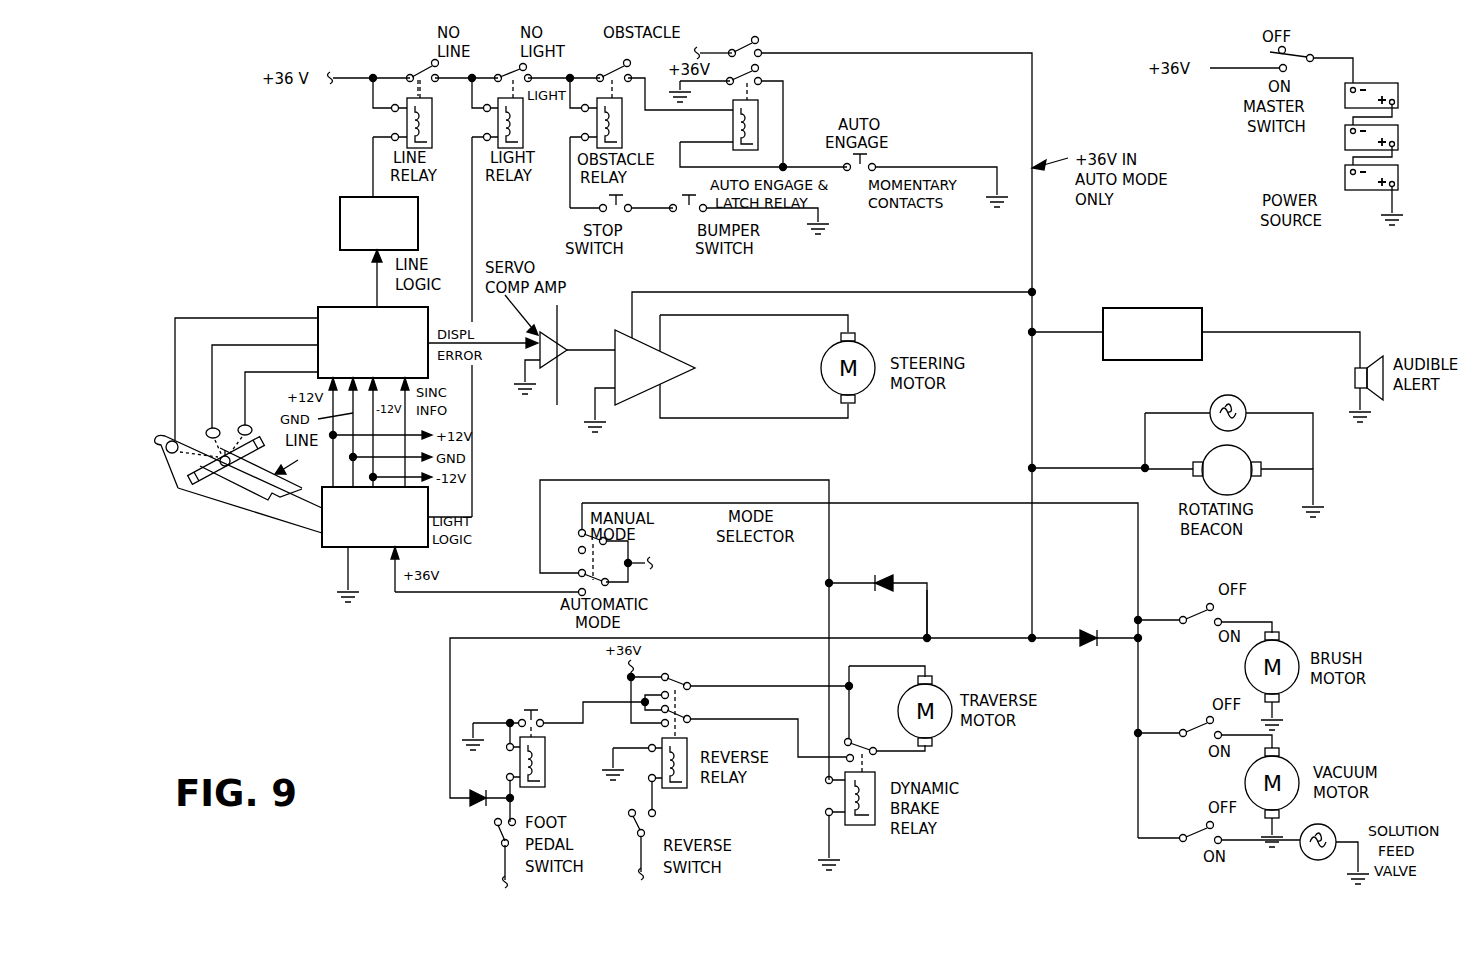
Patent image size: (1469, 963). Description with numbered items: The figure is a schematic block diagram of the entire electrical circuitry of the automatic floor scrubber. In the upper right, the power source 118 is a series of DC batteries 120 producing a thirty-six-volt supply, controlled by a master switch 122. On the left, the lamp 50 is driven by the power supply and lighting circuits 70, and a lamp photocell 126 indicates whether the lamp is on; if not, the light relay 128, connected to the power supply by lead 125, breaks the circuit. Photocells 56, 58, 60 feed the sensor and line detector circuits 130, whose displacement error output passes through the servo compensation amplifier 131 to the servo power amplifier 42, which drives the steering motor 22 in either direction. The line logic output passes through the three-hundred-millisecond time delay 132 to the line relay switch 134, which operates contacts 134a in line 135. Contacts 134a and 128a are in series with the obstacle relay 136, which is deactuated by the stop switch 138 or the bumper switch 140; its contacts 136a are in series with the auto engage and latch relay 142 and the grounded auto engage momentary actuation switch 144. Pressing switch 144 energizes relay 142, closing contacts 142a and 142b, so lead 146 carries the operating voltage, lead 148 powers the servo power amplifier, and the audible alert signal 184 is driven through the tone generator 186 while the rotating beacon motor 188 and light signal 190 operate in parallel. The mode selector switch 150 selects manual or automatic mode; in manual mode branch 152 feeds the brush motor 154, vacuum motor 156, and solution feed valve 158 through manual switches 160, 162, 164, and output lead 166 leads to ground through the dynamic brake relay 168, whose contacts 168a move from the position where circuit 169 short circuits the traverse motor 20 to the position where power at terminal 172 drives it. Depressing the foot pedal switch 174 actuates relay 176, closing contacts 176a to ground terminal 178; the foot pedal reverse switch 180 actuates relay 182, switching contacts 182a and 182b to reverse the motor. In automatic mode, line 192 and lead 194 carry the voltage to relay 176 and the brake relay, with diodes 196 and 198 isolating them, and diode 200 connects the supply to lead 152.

The traverse motor 20 is at (945, 733).
The steering motor 22 is at (872, 348).
The servo power amplifier 42 is at (667, 380).
The lamp 50 is at (200, 493).
The photocell 56 is at (155, 455).
The photocell 58 is at (230, 412).
The photocell 60 is at (200, 420).
The power supply and lighting circuits 70 is at (340, 548).
The power source 118 is at (1346, 154).
The DC batteries 120 is at (1396, 172).
The master switch 122 is at (1300, 51).
The lead 125 is at (475, 500).
The lamp photocell 126 is at (235, 478).
The light relay 128 is at (512, 142).
The light relay contacts 128a is at (530, 68).
The sensor and line detector circuits 130 is at (318, 308).
The servo compensation amplifier 131 is at (564, 344).
The 300 millisecond time delay 132 is at (340, 212).
The line relay switch 134 is at (420, 142).
The line relay contacts 134a is at (445, 92).
The line 135 is at (396, 70).
The obstacle relay 136 is at (612, 142).
The obstacle relay contacts 136a is at (627, 60).
The stop switch 138 is at (632, 204).
The bumper switch 140 is at (681, 215).
The auto engage and latch relay 142 is at (758, 143).
The relay switch 142a is at (762, 70).
The relay contacts 142b is at (762, 43).
The auto engage momentary actuation switch 144 is at (880, 164).
The lead 146 is at (948, 53).
The lead 148 is at (890, 292).
The mode selector switch 150 is at (633, 556).
The branch 152 is at (918, 502).
The brush motor 154 is at (1292, 650).
The vacuum motor 156 is at (1292, 765).
The solution feed valve 158 is at (1310, 860).
The manual switch 160 is at (1200, 612).
The manual switch 162 is at (1197, 725).
The manual switch 164 is at (1200, 832).
The output lead 166 is at (722, 480).
The dynamic brake relay 168 is at (875, 828).
The dynamic brake relay contacts 168a is at (860, 743).
The short circuit 169 is at (852, 712).
The terminal 172 is at (637, 673).
The foot pedal switch 174 is at (500, 833).
The relay 176 is at (542, 788).
The relay contacts 176a is at (532, 712).
The terminal 178 is at (643, 702).
The foot pedal reverse switch 180 is at (645, 826).
The reverse relay switch 182 is at (687, 790).
The reverse relay contacts 182a is at (680, 684).
The reverse relay contacts 182b is at (690, 713).
The audible alert signal 184 is at (1378, 358).
The tone generator 186 is at (1192, 316).
The rotating beacon motor 188 is at (1240, 463).
The light signal 190 is at (1243, 406).
The line 192 is at (448, 682).
The lead 194 is at (928, 603).
The diode 196 is at (470, 801).
The diode 198 is at (892, 578).
The diode 200 is at (1088, 630).